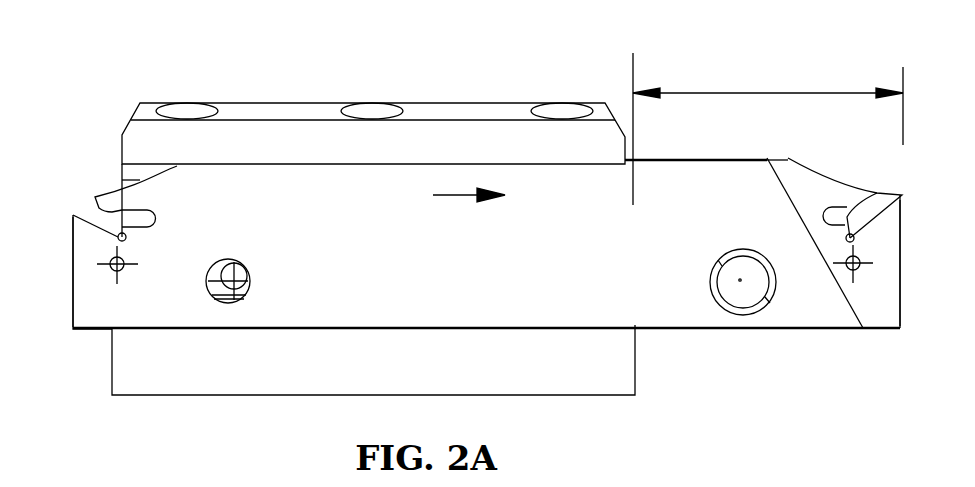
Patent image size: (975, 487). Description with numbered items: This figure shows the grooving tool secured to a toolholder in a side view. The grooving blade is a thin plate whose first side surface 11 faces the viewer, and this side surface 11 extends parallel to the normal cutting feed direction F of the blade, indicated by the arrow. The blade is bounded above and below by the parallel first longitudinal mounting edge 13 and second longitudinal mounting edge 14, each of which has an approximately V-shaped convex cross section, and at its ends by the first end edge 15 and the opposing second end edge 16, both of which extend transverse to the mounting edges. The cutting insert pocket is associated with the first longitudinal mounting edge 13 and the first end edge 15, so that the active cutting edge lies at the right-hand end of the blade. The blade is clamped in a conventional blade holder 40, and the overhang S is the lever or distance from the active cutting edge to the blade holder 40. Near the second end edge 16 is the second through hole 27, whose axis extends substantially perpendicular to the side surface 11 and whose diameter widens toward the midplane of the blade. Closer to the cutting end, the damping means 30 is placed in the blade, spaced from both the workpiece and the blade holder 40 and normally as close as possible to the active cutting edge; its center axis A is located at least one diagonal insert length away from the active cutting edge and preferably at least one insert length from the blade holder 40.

The first side surface 11 is at (408, 298).
The first longitudinal mounting edge 13 is at (678, 157).
The second longitudinal mounting edge 14 is at (660, 330).
The first end edge 15 is at (898, 287).
The second end edge 16 is at (73, 282).
The second through hole 27 is at (223, 267).
The damping means 30 is at (773, 308).
The blade holder 40 is at (435, 108).
The center axis of the damping means A is at (740, 280).
The overhang S is at (768, 126).
The normal cutting feed direction F is at (469, 211).